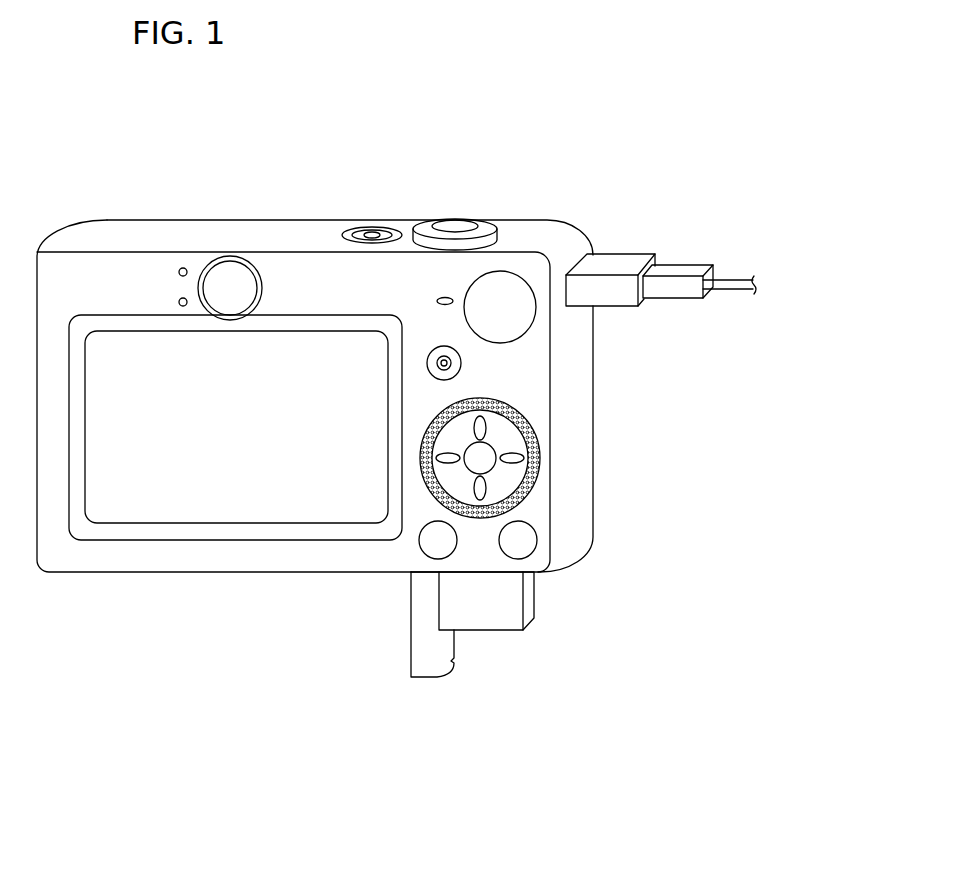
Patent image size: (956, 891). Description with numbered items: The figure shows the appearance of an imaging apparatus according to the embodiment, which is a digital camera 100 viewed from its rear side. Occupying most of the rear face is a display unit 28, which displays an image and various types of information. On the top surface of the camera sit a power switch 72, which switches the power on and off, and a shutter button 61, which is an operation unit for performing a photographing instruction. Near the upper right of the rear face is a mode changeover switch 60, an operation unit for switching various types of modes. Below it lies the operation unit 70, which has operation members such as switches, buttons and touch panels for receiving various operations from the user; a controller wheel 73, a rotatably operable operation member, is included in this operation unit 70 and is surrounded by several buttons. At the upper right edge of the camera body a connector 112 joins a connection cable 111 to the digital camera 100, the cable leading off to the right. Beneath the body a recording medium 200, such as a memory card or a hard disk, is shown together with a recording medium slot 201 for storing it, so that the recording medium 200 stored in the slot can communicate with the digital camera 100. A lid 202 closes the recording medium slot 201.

The digital camera 100 is at (150, 651).
The display unit 28 is at (143, 356).
The power switch 72 is at (375, 237).
The shutter button 61 is at (443, 220).
The mode changeover switch 60 is at (515, 275).
The operation unit 70 is at (482, 245).
The controller wheel 73 is at (533, 435).
The connector 112 is at (595, 262).
The connection cable 111 is at (683, 264).
The recording medium 200 is at (535, 603).
The recording medium slot 201 is at (477, 575).
The lid 202 is at (437, 678).